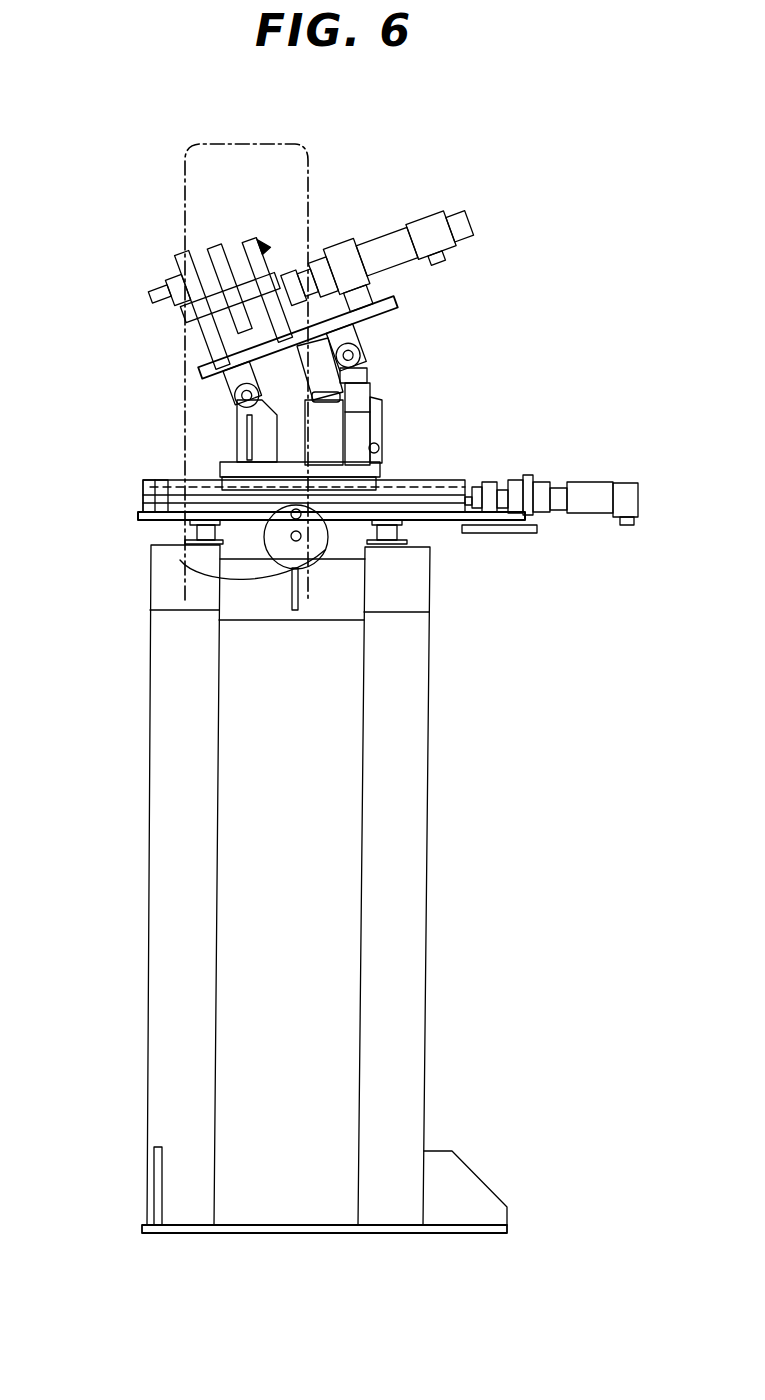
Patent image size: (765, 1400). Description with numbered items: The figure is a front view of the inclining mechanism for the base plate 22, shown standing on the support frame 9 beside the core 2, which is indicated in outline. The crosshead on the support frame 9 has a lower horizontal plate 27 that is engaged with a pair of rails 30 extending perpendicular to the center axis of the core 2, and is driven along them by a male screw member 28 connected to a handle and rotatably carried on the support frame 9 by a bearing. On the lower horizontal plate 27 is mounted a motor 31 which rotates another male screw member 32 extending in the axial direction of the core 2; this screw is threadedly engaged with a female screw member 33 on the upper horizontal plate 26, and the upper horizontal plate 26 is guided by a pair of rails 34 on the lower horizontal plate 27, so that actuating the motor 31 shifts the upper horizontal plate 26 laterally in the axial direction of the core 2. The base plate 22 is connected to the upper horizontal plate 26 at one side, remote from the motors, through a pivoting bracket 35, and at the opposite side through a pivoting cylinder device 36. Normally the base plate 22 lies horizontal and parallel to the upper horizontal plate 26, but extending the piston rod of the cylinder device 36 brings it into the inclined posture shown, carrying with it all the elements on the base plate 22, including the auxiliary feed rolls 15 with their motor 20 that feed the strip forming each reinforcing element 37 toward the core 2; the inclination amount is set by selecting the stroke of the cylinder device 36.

The core 2 is at (176, 170).
The auxiliary feed rolls 15 is at (163, 253).
The motor 20 is at (425, 237).
The base plate 22 is at (373, 320).
The reinforcing element 37 is at (192, 310).
The bracket 35 is at (238, 430).
The cylinder device 36 is at (378, 400).
The female screw member 33 is at (318, 463).
The rails 34 is at (145, 478).
The upper horizontal plate 26 is at (222, 462).
The male screw member 32 is at (425, 490).
The motor 31 is at (583, 495).
The rails 30 is at (185, 536).
The lower horizontal plate 27 is at (243, 528).
The male screw member 28 is at (322, 548).
The support frame 9 is at (177, 763).